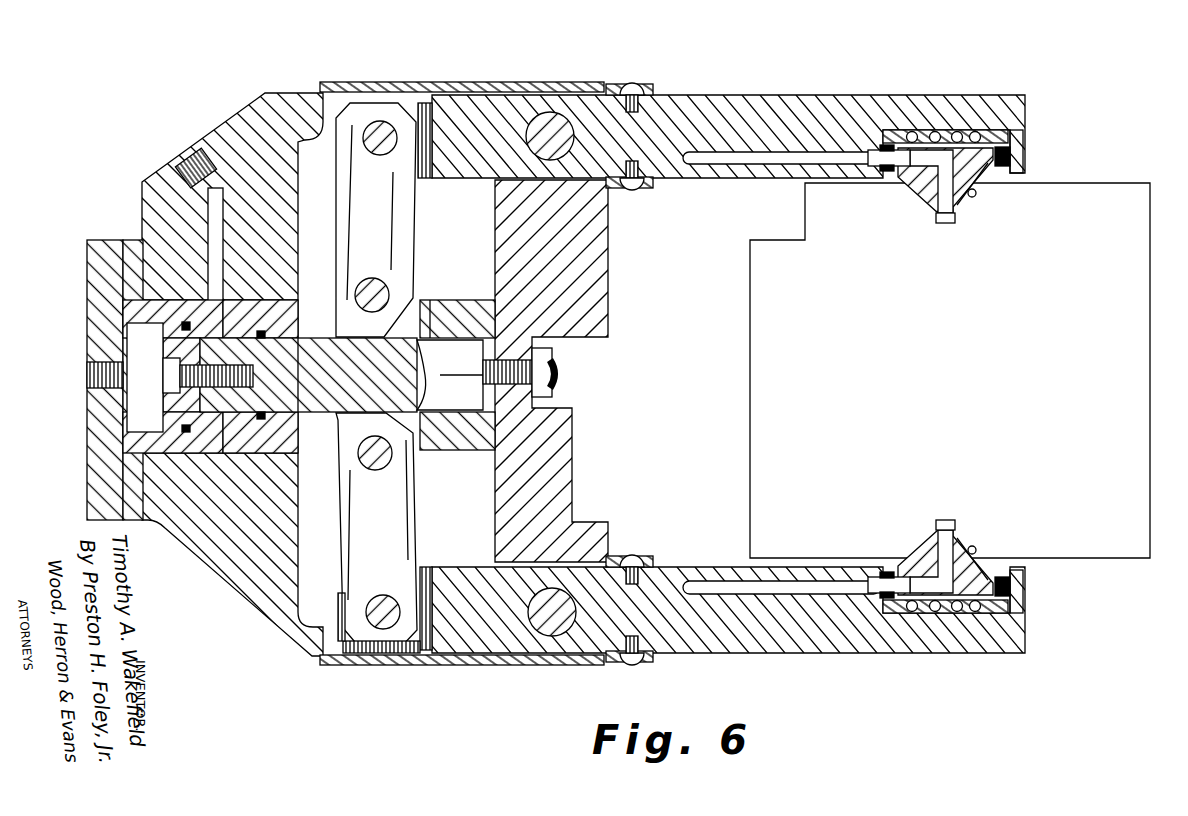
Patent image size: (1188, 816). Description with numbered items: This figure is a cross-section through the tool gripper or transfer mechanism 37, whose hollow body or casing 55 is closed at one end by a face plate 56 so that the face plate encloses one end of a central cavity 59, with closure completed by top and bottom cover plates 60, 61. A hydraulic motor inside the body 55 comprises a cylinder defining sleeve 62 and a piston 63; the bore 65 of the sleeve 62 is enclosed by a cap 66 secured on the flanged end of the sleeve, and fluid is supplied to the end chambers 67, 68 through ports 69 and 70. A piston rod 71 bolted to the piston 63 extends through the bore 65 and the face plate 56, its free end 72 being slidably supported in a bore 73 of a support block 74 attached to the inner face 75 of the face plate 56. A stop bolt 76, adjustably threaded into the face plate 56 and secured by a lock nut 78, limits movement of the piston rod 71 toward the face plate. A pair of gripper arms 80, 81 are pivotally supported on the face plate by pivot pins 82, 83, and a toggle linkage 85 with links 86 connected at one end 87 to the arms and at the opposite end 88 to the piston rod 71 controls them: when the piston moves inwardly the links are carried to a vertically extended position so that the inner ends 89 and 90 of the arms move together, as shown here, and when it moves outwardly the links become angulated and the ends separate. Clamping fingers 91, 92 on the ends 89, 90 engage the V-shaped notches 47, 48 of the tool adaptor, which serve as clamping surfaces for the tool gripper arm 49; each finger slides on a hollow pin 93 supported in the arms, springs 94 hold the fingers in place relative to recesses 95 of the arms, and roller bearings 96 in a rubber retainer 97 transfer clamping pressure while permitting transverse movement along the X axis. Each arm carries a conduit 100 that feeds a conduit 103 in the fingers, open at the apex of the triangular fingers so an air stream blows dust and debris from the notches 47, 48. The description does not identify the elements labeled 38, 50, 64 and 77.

The tool gripper 37 is at (730, 80).
The workpiece 38 is at (748, 395).
The V-shaped notch 47 is at (976, 198).
The V-shaped notch 48 is at (977, 548).
The tool gripper arm 49 is at (718, 180).
The locating pin 50 is at (945, 226).
The hollow body 55 is at (294, 100).
The face plate 56 is at (608, 250).
The central cavity 59 is at (330, 108).
The top cover plate 60 is at (482, 82).
The bottom cover plate 61 is at (471, 667).
The cylinder defining sleeve 62 is at (299, 298).
The piston 63 is at (176, 322).
The chamber 64 is at (138, 407).
The bore 65 is at (166, 440).
The cap 66 is at (98, 300).
The end chamber 67 is at (140, 347).
The end chamber 68 is at (215, 440).
The port 69 is at (95, 380).
The port 70 is at (193, 160).
The piston rod 71 is at (318, 412).
The free end 72 is at (465, 452).
The bore 73 is at (458, 330).
The support block 74 is at (490, 437).
The inner face 75 is at (495, 515).
The stop bolt 76 is at (560, 373).
The bolt 77 is at (485, 371).
The lock nut 78 is at (552, 352).
The gripper arm 80 is at (848, 95).
The gripper arm 81 is at (833, 653).
The pivot pin 82 is at (560, 122).
The pivot pin 83 is at (556, 638).
The toggle linkage 85 is at (428, 240).
The link 86 is at (380, 362).
The end 87 is at (396, 100).
The end 88 is at (393, 308).
The inner end 89 is at (1025, 98).
The inner end 90 is at (1026, 645).
The clamping finger 91 is at (992, 187).
The clamping finger 92 is at (922, 548).
The hollow pin 93 is at (880, 170).
The spring 94 is at (1014, 155).
The recess 95 is at (1012, 138).
The roller bearing 96 is at (935, 130).
The rubber retainer 97 is at (997, 130).
The conduit 100 is at (764, 166).
The conduit 103 is at (935, 195).